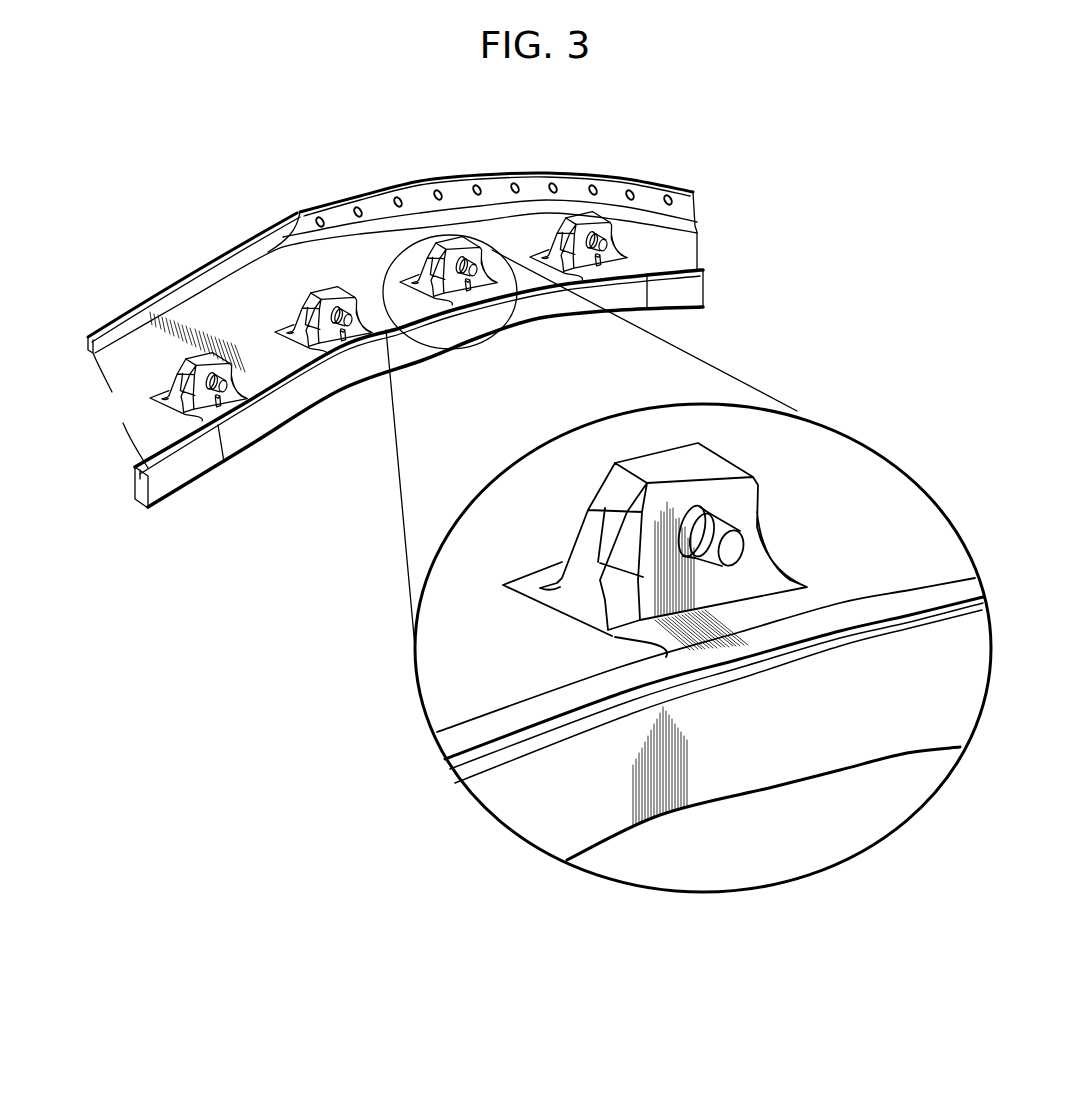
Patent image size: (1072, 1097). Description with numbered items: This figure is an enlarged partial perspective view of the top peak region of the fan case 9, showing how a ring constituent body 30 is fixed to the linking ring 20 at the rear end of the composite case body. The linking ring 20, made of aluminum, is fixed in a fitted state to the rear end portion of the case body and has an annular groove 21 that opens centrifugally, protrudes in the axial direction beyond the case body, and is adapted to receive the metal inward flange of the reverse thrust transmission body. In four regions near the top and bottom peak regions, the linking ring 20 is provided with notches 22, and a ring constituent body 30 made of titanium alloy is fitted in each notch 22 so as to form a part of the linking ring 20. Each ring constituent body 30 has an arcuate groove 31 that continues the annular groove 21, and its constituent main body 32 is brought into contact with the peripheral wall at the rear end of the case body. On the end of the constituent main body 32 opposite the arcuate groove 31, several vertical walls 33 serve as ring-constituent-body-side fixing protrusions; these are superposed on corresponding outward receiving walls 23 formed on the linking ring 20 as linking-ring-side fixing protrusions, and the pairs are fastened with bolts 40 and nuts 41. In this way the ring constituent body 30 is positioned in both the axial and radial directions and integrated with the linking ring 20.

The fan case 9 is at (341, 176).
The linking ring 20 is at (240, 262).
The annular groove 21 is at (181, 448).
The notches 22 is at (253, 377).
The outward receiving walls 23 is at (312, 290).
The ring constituent body 30 is at (326, 390).
The arcuate groove 31 is at (285, 385).
The constituent main body 32 is at (807, 618).
The vertical walls 33 is at (740, 482).
The bolts 40 is at (740, 547).
The nuts 41 is at (713, 525).